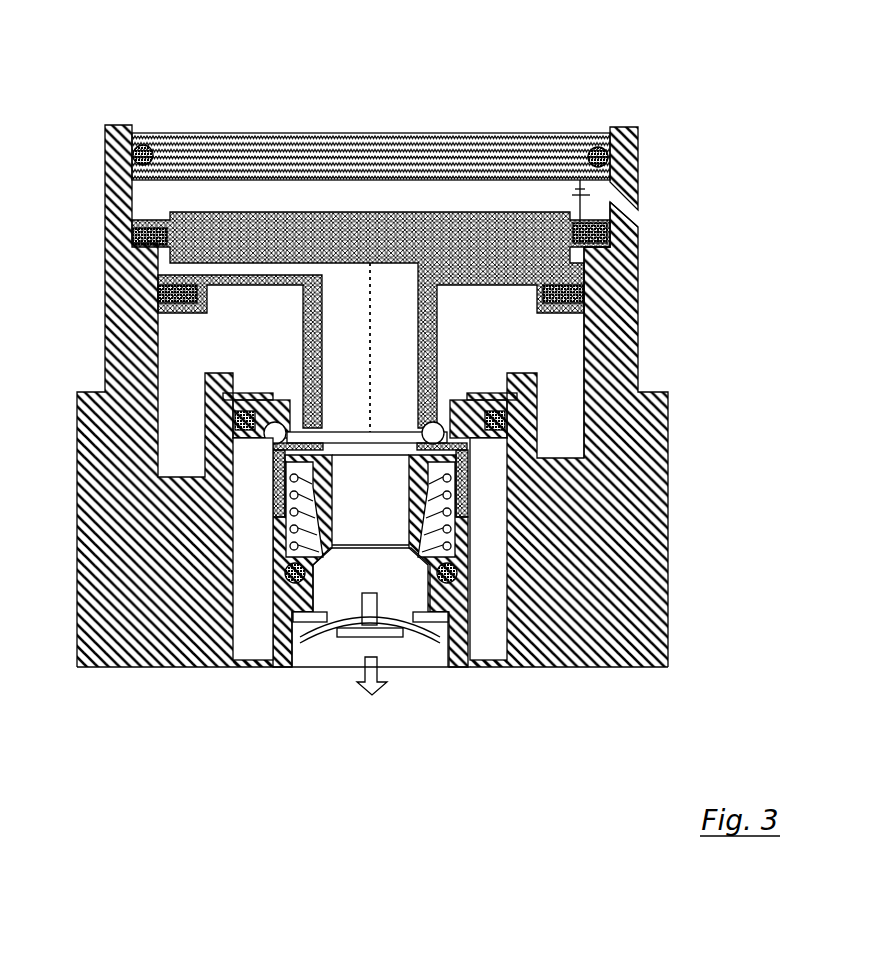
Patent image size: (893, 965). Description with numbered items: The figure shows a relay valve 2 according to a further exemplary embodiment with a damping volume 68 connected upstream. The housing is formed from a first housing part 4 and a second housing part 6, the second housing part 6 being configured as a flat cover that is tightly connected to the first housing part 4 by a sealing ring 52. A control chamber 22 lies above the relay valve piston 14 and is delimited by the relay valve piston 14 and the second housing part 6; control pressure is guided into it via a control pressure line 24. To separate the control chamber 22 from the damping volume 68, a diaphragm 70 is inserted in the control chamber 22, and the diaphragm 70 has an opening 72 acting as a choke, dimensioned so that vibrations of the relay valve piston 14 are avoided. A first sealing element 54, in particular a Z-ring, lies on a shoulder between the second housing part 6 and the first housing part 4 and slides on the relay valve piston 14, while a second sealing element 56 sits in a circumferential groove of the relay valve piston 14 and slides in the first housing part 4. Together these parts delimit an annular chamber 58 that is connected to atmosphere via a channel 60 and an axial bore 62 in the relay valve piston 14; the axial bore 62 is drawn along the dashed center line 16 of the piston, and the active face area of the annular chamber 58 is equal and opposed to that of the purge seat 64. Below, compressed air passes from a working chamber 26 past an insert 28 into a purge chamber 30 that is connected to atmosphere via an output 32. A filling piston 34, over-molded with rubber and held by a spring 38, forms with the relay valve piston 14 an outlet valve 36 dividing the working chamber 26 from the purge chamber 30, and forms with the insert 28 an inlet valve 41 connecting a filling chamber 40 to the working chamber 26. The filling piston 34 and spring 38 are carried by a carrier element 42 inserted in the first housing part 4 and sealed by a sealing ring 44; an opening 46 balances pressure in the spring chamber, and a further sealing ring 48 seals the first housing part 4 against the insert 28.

The relay valve 2 is at (597, 78).
The first housing part 4 is at (640, 592).
The second housing part 6 is at (376, 152).
The relay valve piston 14 is at (205, 226).
The central axis 16 is at (368, 303).
The control chamber 22 is at (280, 208).
The control pressure line 24 is at (636, 220).
The working chamber 26 is at (485, 324).
The insert 28 is at (520, 421).
The purge chamber 30 is at (357, 509).
The output 32 is at (378, 697).
The filling piston 34 is at (410, 457).
The outlet valve 36 is at (518, 460).
The spring 38 is at (318, 503).
The filling chamber 40 is at (237, 610).
The inlet valve 41 is at (268, 431).
The carrier element 42 is at (313, 613).
The sealing ring 44 is at (429, 566).
The opening 46 is at (288, 456).
The further sealing ring 48 is at (237, 422).
The sealing ring 52 is at (630, 140).
The first sealing element 54 is at (611, 237).
The second sealing element 56 is at (604, 320).
The annular chamber 58 is at (586, 278).
The channel 60 is at (272, 268).
The axial bore 62 is at (342, 340).
The purge seat 64 is at (345, 426).
The damping volume 68 is at (600, 200).
The diaphragm 70 is at (579, 197).
The opening 72 is at (574, 193).